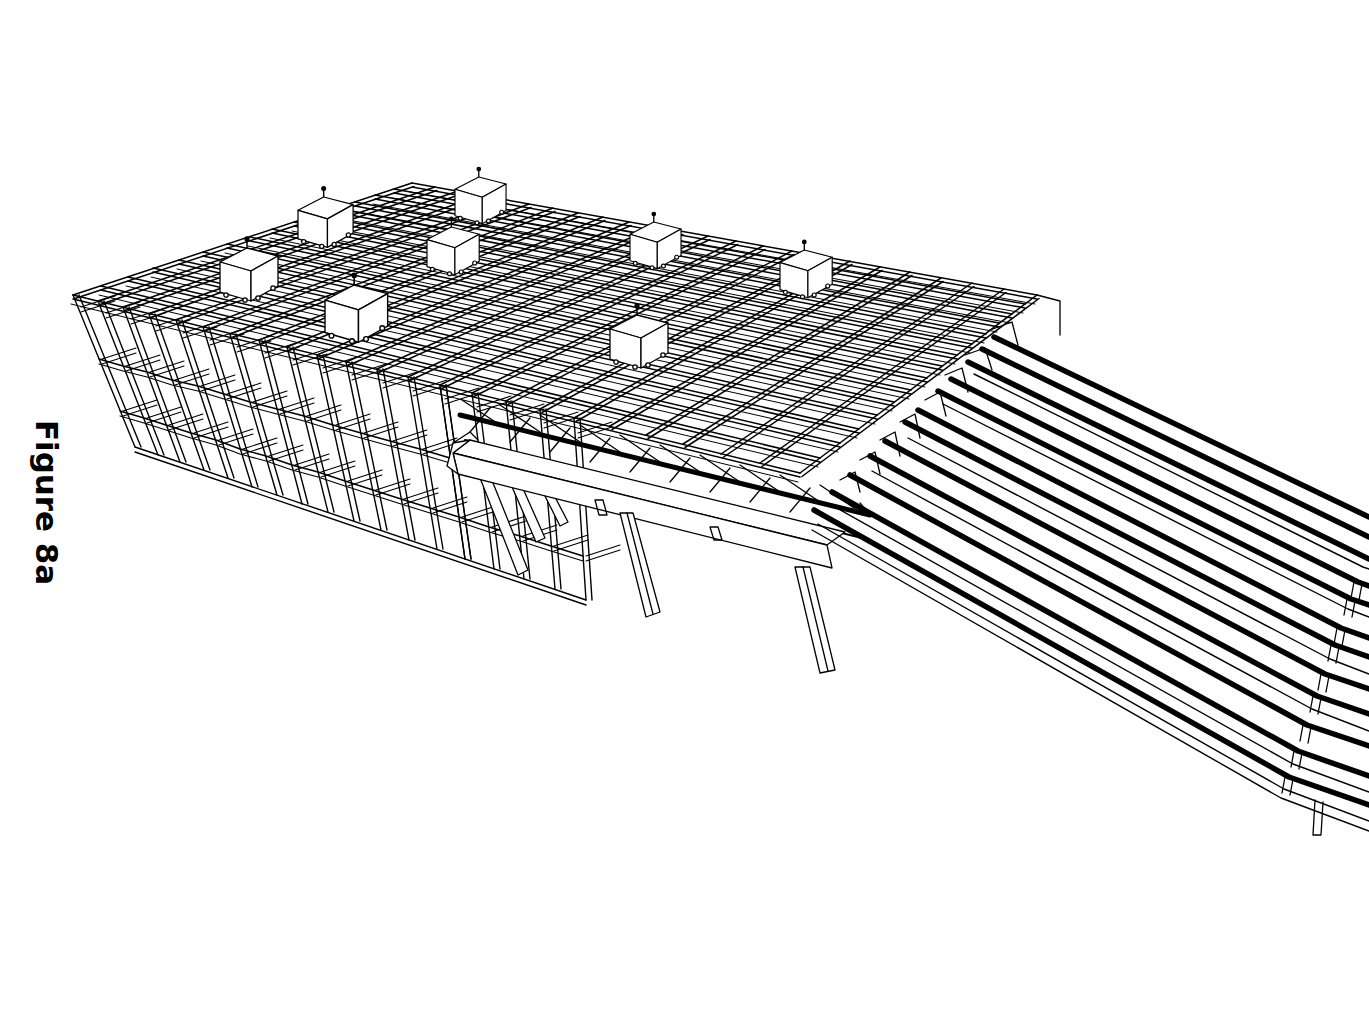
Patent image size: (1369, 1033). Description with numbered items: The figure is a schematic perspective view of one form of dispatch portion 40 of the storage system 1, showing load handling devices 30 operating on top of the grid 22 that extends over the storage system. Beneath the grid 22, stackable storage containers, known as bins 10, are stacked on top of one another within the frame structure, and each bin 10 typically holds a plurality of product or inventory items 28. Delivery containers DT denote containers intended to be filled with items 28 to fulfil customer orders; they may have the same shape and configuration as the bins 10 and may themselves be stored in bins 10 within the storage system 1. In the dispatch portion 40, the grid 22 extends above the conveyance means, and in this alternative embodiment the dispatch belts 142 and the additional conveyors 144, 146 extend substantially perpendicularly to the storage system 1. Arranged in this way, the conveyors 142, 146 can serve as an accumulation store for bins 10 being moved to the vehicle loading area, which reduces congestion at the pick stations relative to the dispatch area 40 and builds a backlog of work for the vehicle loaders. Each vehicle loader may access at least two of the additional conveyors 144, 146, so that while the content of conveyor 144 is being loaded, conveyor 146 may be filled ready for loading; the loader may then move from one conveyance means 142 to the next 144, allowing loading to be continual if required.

The storage system 1 is at (553, 181).
The bin 10 is at (710, 485).
The grid 22 is at (290, 350).
The inventory items 28 is at (483, 400).
The container handling vehicle 30 is at (247, 252).
The dispatch portion 40 is at (596, 550).
The delivery container DT is at (700, 490).
The dispatch belt 142 is at (1005, 345).
The additional conveyor 144 is at (890, 543).
The additional conveyor 146 is at (1016, 553).